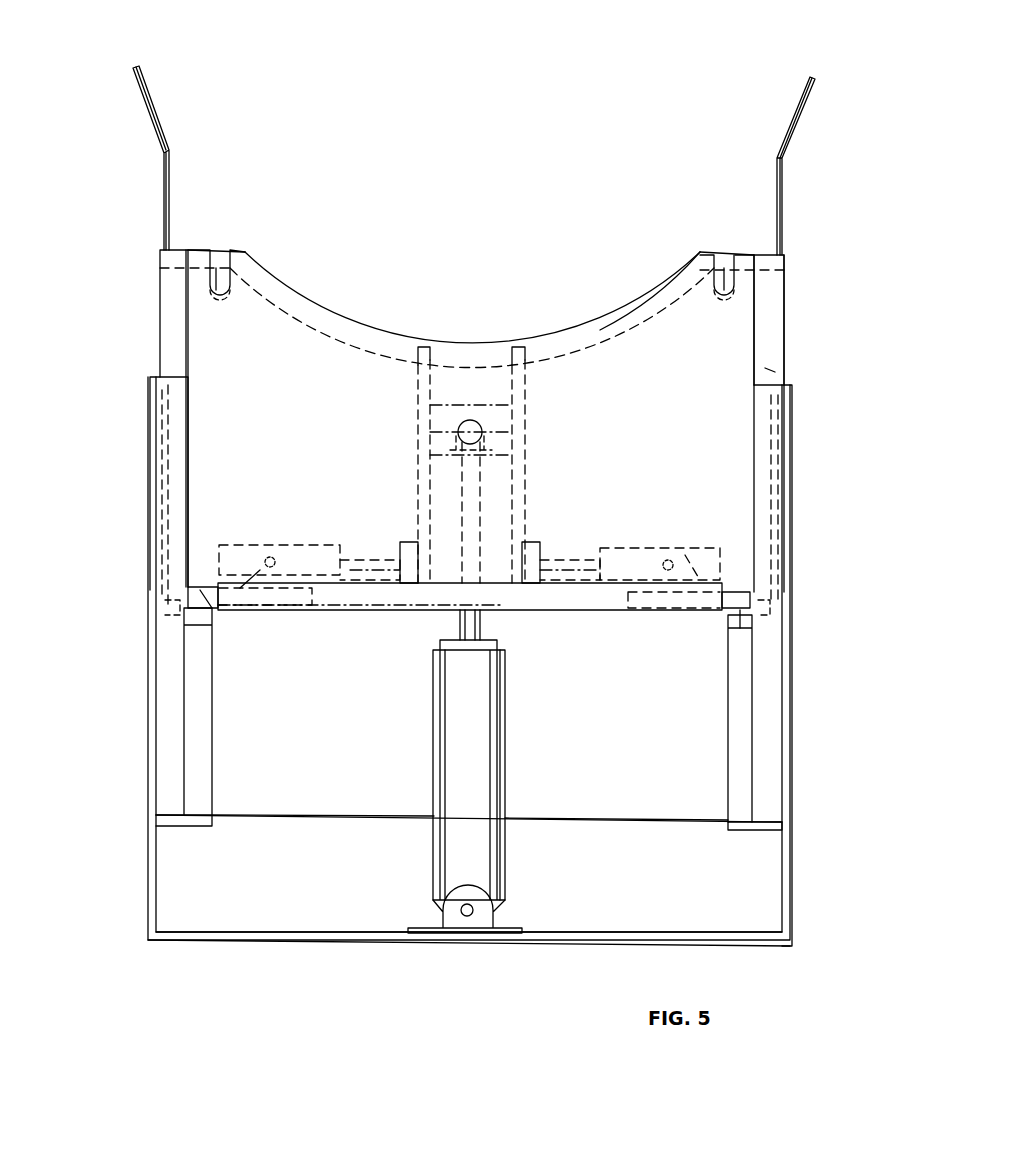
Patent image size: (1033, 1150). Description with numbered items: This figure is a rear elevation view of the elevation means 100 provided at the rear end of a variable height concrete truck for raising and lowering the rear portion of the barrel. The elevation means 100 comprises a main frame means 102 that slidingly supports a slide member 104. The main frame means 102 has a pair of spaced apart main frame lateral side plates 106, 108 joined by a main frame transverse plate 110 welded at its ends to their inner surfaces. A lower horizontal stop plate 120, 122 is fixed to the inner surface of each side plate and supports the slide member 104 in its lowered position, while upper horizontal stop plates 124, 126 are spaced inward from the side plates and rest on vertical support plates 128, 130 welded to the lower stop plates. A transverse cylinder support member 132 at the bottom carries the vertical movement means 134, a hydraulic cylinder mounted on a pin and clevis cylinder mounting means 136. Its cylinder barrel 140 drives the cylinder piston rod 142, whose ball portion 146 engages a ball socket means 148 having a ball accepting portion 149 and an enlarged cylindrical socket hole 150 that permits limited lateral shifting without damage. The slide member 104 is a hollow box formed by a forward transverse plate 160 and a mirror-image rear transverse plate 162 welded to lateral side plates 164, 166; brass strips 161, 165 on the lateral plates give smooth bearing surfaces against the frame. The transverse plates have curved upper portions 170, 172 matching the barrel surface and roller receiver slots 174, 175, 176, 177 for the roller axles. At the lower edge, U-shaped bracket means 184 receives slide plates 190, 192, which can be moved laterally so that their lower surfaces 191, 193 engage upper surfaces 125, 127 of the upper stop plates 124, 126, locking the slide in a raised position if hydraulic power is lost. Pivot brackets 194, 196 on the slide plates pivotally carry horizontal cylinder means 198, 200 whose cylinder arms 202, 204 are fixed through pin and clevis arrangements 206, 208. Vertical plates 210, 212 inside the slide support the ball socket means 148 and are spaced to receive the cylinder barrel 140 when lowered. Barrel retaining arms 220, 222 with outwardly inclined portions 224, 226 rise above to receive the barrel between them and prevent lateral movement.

The elevation means 100 is at (840, 64).
The main frame means 102 is at (788, 621).
The slide member 104 is at (768, 368).
The main frame lateral side plate 106 is at (152, 720).
The main frame lateral side plate 108 is at (784, 660).
The main frame transverse plate 110 is at (598, 745).
The lower horizontal stop plate 120 is at (182, 828).
The lower horizontal stop plate 122 is at (752, 833).
The upper horizontal stop plate 124 is at (172, 615).
The upper surface of upper stop means 125 is at (190, 600).
The upper horizontal stop plate 126 is at (750, 620).
The upper surface of upper stop means 127 is at (710, 615).
The vertical support plate 128 is at (200, 772).
The vertical support plate 130 is at (736, 742).
The cylinder support member 132 is at (295, 940).
The vertical movement means 134 is at (506, 842).
The cylinder mounting means 136 is at (478, 915).
The cylinder barrel 140 is at (482, 793).
The cylinder piston rod 142 is at (480, 630).
The ball portion 146 is at (478, 437).
The ball socket means 148 is at (496, 420).
The ball accepting portion 149 is at (484, 420).
The cylindrical socket hole 150 is at (459, 440).
The forward transverse plate 160 is at (342, 330).
The brass strip 161 is at (165, 345).
The rear transverse plate 162 is at (308, 430).
The lateral side plate 164 is at (165, 270).
The brass strip 165 is at (784, 385).
The lateral side plate 166 is at (770, 322).
The curved upper portion 170 is at (548, 357).
The curved upper portion 172 is at (636, 305).
The roller receiver slot 174 is at (235, 266).
The roller receiver slot 175 is at (218, 272).
The roller receiver slot 176 is at (724, 296).
The roller receiver slot 177 is at (722, 285).
The U-shaped bracket means 184 is at (416, 608).
The slide plate 190 is at (295, 605).
The lower surface of slide plate 191 is at (150, 601).
The slide plate 192 is at (652, 608).
The lower surface of slide plate 193 is at (777, 615).
The pivot bracket 194 is at (250, 560).
The pivot bracket 196 is at (690, 570).
The horizontal cylinder means 198 is at (301, 555).
The horizontal cylinder means 200 is at (656, 548).
The cylinder arm 202 is at (360, 550).
The cylinder arm 204 is at (540, 565).
The pin and clevis arrangement 206 is at (414, 547).
The pin and clevis arrangement 208 is at (554, 558).
The vertical plate 210 is at (417, 400).
The vertical plate 212 is at (532, 400).
The barrel retaining arm 220 is at (162, 187).
The barrel retaining arm 222 is at (784, 188).
The outwardly inclined portion 224 is at (148, 103).
The outwardly inclined portion 226 is at (794, 133).